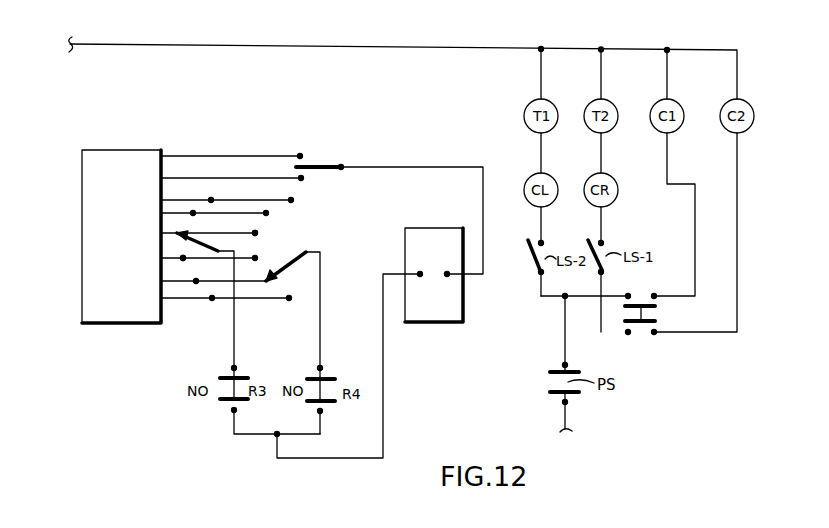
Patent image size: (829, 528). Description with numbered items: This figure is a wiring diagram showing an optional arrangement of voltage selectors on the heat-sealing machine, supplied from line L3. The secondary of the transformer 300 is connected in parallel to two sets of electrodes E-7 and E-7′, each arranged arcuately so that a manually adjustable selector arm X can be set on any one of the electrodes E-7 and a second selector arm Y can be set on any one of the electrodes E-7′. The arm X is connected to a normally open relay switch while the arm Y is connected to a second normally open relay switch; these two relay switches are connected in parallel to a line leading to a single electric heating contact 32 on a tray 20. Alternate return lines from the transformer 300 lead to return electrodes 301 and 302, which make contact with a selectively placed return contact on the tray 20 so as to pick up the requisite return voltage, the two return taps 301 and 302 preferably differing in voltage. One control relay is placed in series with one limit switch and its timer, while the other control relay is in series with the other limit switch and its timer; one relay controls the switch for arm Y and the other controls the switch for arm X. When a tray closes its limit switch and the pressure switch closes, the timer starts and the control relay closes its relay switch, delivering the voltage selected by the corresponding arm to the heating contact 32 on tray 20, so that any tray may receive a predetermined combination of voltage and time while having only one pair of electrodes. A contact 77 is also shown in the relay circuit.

The transformer 300 is at (82, 263).
The return tap 301 is at (300, 153).
The return tap 302 is at (303, 180).
The electric heating contact 32 is at (418, 270).
The tray 20 is at (437, 323).
The relay contact 77 is at (656, 311).
The supply line L3 is at (263, 44).
The selector arm X is at (208, 242).
The selector arm Y is at (283, 266).
The set of electrodes E-7 is at (186, 261).
The set of electrodes E-7′ is at (258, 233).